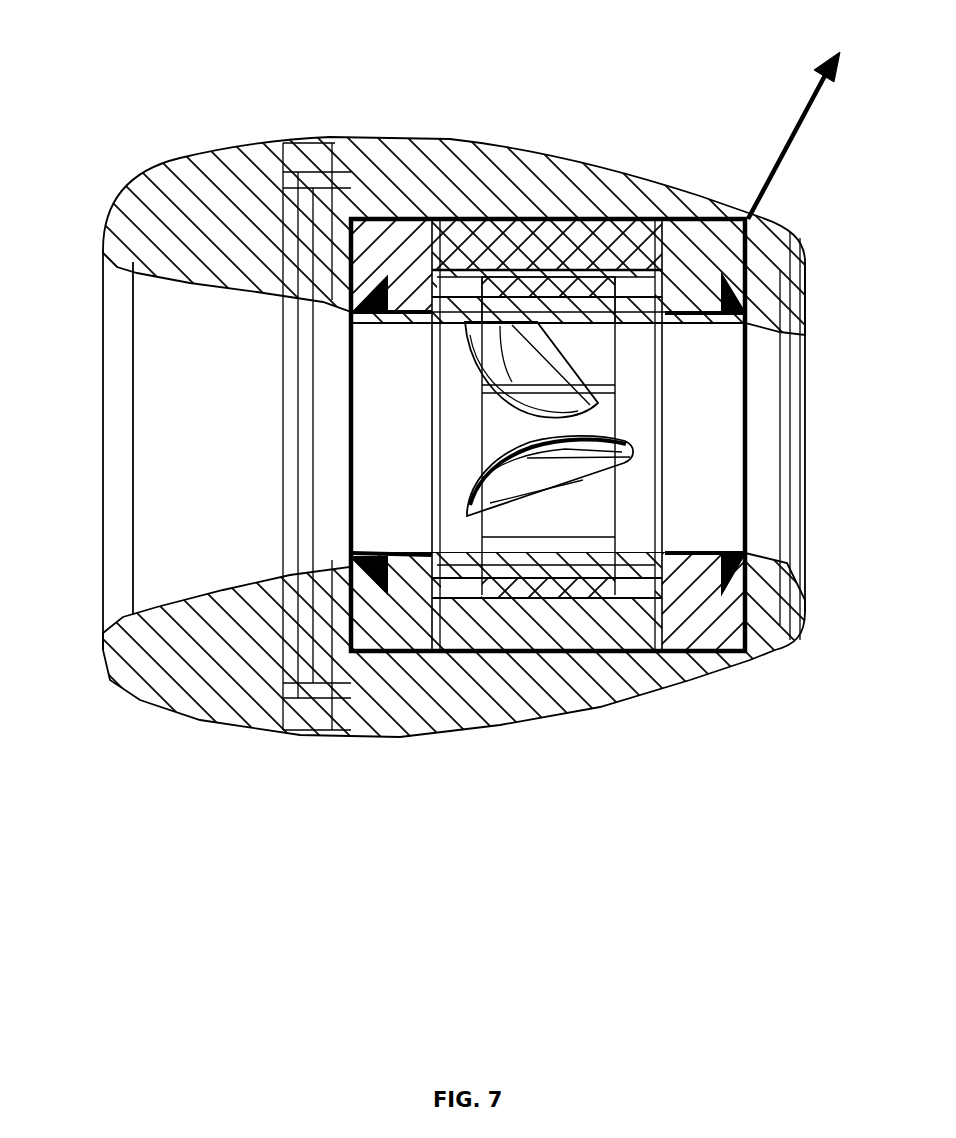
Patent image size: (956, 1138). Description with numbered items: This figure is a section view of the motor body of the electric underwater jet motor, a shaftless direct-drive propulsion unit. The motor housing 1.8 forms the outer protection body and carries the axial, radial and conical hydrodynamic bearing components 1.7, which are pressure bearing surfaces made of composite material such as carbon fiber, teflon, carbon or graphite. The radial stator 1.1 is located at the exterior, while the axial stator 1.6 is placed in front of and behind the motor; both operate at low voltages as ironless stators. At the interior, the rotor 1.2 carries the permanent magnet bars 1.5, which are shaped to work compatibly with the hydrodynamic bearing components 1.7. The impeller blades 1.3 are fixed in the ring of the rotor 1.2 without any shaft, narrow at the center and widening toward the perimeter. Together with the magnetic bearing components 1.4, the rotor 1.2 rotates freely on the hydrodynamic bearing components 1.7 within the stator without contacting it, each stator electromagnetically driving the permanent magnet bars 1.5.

The radial stator 1.1 is at (528, 250).
The rotor 1.2 is at (532, 312).
The pusher impeller 1.3 is at (587, 478).
The magnetic bearing components 1.4 is at (432, 313).
The permanent magnet bars 1.5 is at (441, 582).
The axial stator 1.6 is at (400, 250).
The hydrodynamic bearing components 1.7 is at (356, 568).
The motor protection body 1.8 is at (808, 126).